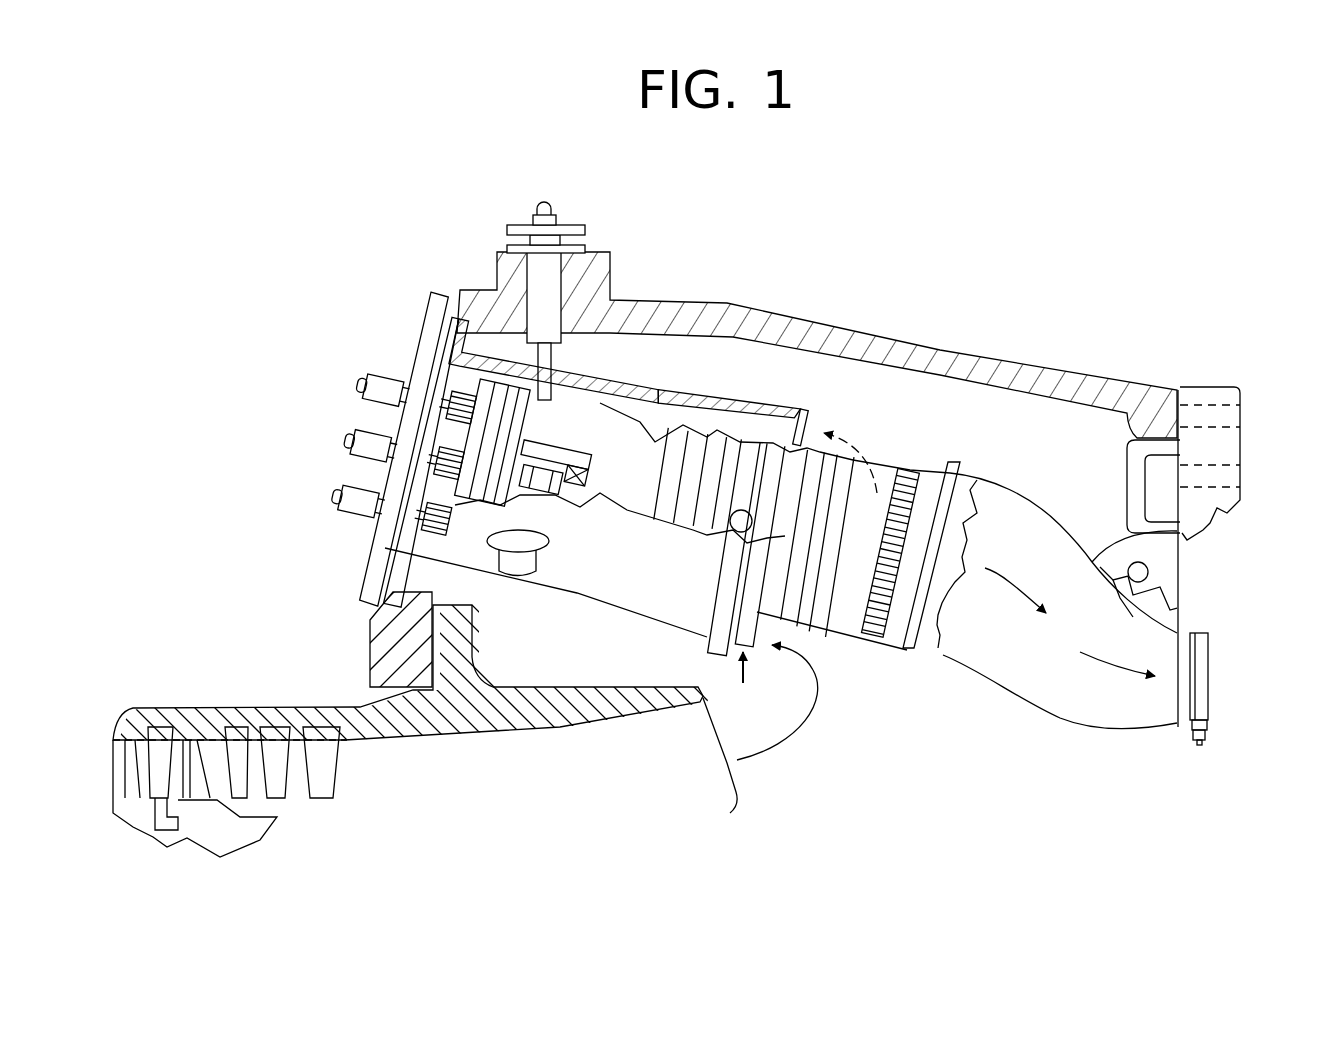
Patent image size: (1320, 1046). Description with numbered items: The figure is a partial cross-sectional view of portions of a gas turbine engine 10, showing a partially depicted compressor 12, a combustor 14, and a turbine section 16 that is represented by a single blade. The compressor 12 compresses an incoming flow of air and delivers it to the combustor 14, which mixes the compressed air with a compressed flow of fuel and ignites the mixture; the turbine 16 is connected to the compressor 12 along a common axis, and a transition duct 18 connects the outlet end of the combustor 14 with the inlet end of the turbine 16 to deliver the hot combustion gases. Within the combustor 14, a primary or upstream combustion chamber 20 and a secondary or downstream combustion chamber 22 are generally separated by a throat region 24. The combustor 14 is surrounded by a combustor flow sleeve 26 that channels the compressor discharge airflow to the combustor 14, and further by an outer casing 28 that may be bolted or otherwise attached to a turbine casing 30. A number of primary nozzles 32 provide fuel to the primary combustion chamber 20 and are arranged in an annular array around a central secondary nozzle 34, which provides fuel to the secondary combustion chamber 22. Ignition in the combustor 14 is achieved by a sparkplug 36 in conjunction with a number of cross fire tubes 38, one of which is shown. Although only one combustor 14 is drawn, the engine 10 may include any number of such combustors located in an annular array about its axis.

The gas turbine engine 10 is at (458, 204).
The compressor 12 is at (563, 722).
The combustor 14 is at (775, 702).
The turbine section 16 is at (1205, 680).
The transition duct 18 is at (1058, 682).
The primary combustion chamber 20 is at (568, 417).
The secondary combustion chamber 22 is at (697, 523).
The throat region 24 is at (655, 450).
The combustor flow sleeve 26 is at (760, 398).
The outer casing 28 is at (1043, 365).
The turbine casing 30 is at (1233, 445).
The primary nozzles 32 is at (450, 378).
The secondary nozzle 34 is at (560, 452).
The sparkplug 36 is at (552, 282).
The cross fire tubes 38 is at (543, 557).